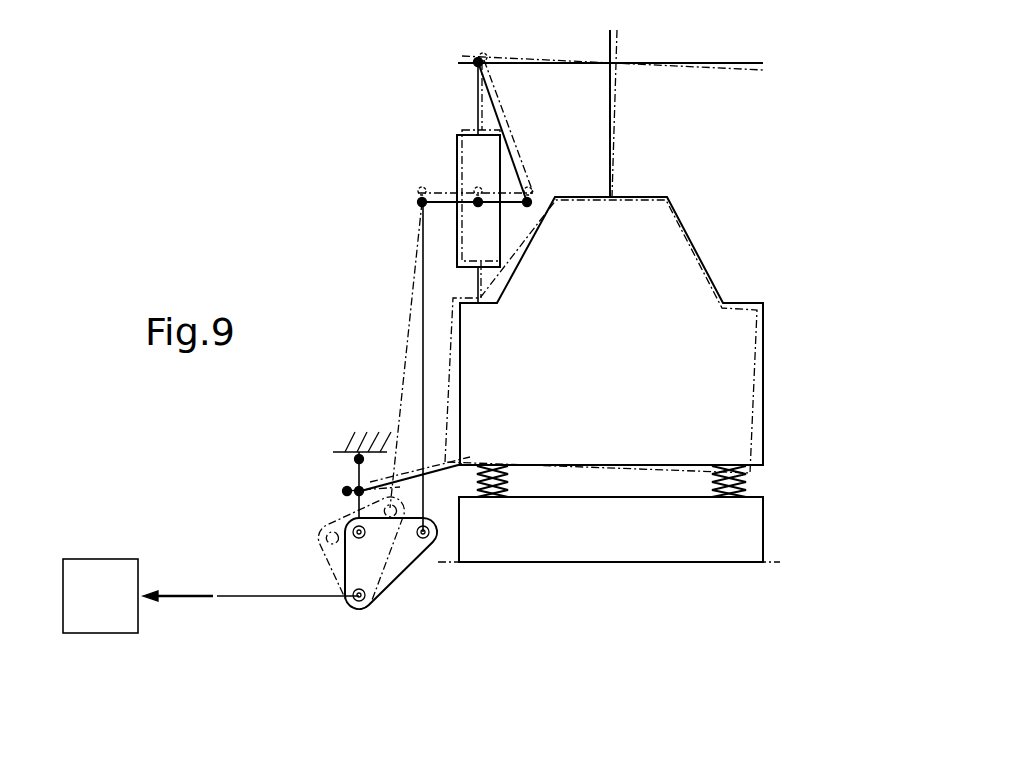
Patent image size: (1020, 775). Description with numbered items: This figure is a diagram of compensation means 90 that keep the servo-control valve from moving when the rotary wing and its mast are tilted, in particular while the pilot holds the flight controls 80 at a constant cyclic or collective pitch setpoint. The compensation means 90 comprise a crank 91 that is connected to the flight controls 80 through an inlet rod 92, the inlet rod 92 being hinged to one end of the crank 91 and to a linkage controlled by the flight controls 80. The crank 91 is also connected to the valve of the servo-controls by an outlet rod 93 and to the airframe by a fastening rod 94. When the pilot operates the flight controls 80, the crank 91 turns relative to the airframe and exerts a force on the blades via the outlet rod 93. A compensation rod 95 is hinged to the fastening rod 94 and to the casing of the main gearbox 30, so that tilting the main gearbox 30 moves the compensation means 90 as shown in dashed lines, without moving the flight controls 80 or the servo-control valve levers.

The main gearbox 30 is at (628, 349).
The flight controls 80 is at (115, 604).
The compensation means 90 is at (303, 507).
The crank 91 is at (410, 582).
The inlet rod 92 is at (238, 594).
The outlet rod 93 is at (407, 348).
The fastening rod 94 is at (355, 475).
The compensation rod 95 is at (440, 473).